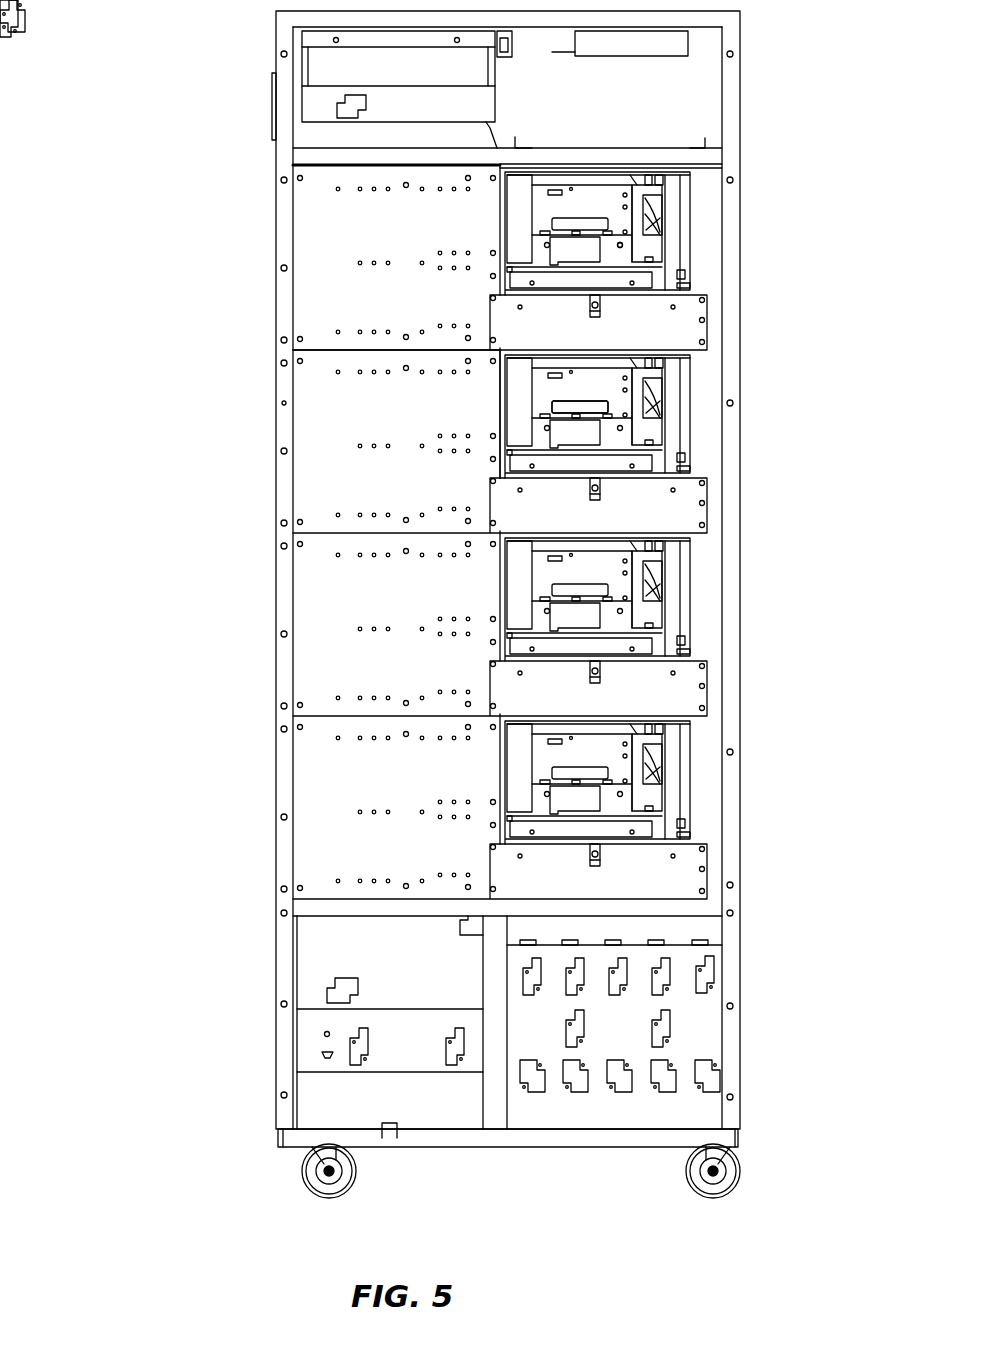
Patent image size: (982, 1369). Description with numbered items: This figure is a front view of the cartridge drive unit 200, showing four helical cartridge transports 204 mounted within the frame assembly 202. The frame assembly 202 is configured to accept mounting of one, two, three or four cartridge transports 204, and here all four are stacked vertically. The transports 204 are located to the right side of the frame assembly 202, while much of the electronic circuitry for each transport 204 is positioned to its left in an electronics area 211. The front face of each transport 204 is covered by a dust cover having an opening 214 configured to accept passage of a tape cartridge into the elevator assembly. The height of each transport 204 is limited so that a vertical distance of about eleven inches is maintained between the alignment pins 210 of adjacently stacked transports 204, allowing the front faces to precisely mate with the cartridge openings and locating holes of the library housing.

The cartridge drive unit 200 is at (140, 196).
The frame assembly 202 is at (276, 307).
The helical cartridge transport 204 is at (702, 208).
The alignment pin 210 is at (623, 246).
The electronics area 211 is at (401, 423).
The opening 214 is at (588, 402).